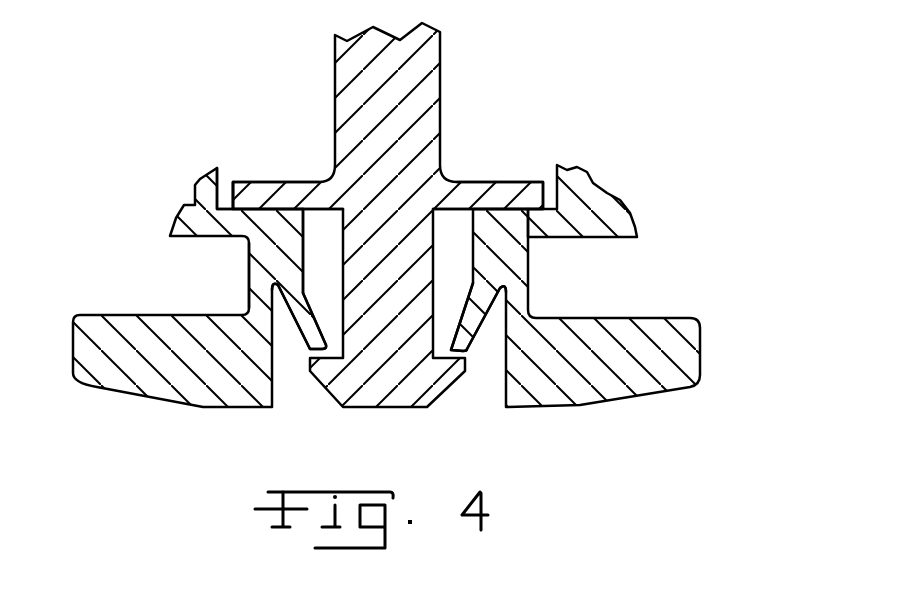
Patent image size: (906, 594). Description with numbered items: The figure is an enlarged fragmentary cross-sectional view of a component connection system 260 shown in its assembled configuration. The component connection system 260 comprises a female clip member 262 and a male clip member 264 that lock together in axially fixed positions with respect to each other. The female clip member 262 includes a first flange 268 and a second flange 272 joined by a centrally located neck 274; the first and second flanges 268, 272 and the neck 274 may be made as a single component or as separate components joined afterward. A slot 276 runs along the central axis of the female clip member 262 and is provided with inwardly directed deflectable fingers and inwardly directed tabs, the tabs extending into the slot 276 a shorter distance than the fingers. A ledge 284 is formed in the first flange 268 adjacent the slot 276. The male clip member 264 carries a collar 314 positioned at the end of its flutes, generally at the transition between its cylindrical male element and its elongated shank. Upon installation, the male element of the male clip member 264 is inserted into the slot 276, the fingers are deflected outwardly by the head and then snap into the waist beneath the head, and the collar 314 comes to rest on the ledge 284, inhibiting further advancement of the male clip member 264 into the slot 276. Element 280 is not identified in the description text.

The component connection system 260 is at (228, 92).
The female clip member 262 is at (173, 262).
The male clip member 264 is at (322, 128).
The first flange 268 is at (604, 205).
The second flange 272 is at (687, 351).
The neck 274 is at (248, 277).
The slot 276 is at (476, 387).
The sealing lip 280 is at (296, 331).
The ledge 284 is at (222, 206).
The collar 314 is at (482, 192).